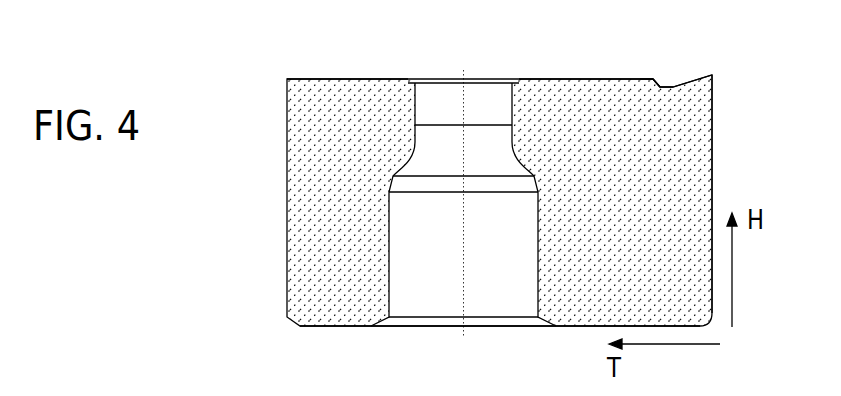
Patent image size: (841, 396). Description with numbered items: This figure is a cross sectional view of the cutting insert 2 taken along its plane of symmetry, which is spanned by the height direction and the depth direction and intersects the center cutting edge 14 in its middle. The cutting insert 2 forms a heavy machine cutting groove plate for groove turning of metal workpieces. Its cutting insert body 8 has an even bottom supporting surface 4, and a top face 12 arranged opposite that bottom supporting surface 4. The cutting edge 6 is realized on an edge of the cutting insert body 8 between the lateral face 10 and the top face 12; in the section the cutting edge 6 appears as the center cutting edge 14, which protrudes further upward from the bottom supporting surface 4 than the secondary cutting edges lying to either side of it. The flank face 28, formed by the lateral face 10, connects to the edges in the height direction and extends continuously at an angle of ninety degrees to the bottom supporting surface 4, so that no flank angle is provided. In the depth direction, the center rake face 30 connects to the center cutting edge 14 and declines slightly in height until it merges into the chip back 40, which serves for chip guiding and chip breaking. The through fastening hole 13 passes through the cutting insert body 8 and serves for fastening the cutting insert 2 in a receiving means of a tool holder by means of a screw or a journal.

The cutting insert 2 is at (694, 53).
The bottom supporting surface 4 is at (353, 326).
The cutting edge 6 is at (727, 73).
The cutting insert body 8 is at (314, 87).
The lateral face 10 is at (713, 137).
The top face 12 is at (590, 78).
The through fastening hole 13 is at (453, 97).
The center cutting edge 14 is at (722, 82).
The flank face 28 is at (713, 167).
The center rake face 30 is at (674, 84).
The chip back 40 is at (660, 79).